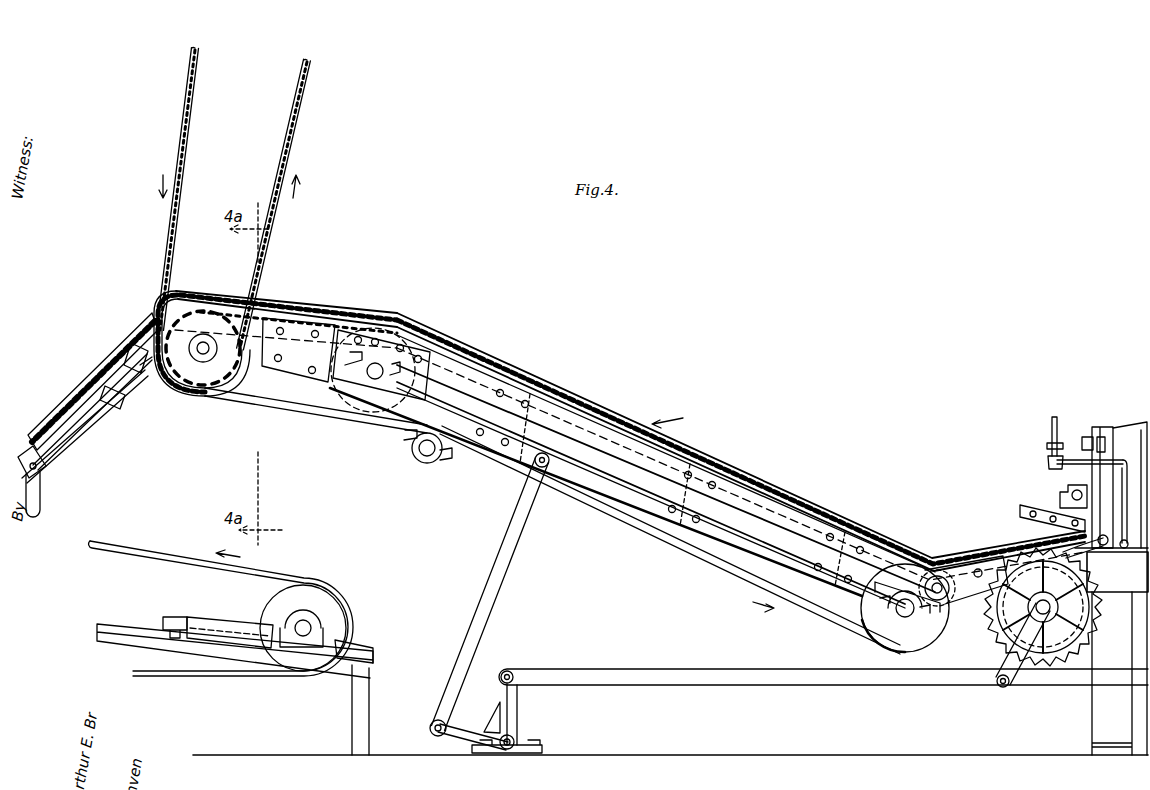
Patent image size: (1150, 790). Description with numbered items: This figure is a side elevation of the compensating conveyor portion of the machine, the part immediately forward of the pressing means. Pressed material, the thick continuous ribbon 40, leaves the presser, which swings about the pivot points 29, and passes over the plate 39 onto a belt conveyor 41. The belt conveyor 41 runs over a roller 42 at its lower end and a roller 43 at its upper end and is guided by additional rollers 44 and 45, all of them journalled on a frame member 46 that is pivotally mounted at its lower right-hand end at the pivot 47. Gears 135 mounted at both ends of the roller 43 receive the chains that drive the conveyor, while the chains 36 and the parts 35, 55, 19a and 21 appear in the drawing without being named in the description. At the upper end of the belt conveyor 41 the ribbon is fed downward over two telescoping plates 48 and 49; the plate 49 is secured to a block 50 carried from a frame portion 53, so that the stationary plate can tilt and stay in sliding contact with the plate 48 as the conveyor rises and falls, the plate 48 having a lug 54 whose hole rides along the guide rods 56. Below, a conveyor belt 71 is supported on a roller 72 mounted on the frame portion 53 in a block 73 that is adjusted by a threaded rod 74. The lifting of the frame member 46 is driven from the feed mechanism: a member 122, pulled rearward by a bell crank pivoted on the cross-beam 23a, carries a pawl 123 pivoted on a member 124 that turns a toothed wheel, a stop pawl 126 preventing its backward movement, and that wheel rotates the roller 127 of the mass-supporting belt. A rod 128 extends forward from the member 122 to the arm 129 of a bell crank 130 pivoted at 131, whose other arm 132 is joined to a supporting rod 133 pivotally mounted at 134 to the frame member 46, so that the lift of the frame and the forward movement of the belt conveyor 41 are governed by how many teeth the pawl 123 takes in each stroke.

The elevator chains 36 is at (300, 123).
The plastic material ribbon 40 is at (396, 318).
The plate 39 is at (945, 560).
The frame member 46 is at (575, 422).
The roller 43 is at (207, 364).
The gears 135 is at (228, 362).
The roller 44 is at (366, 383).
The roller 45 is at (432, 462).
The telescoping plate 48 is at (60, 420).
The telescoping plate 49 is at (75, 443).
The block 50 is at (46, 472).
The lug 54 is at (142, 374).
The block 55 is at (117, 410).
The guide rods 56 is at (70, 460).
The conveyor belt 71 is at (165, 560).
The roller 72 is at (320, 610).
The block 73 is at (325, 635).
The threaded rod 74 is at (182, 612).
The frame portion 53 is at (215, 645).
The supporting rod 133 is at (500, 580).
The pivot 134 is at (533, 468).
The rod 128 is at (713, 686).
The bell crank 130 is at (520, 668).
The arm 129 is at (518, 712).
The pivot 131 is at (510, 750).
The arm 132 is at (460, 745).
The belt conveyor 41 is at (730, 580).
The roller 42 is at (930, 640).
The pivot 47 is at (940, 576).
The sprocket wheel 19a is at (1050, 620).
The gear 21 is at (1080, 650).
The member 122 is at (1040, 660).
The pawl 123 is at (1045, 610).
The member 124 is at (1003, 645).
The roller 127 is at (1005, 620).
The stop pawl 126 is at (1125, 575).
The cross-beam 23a is at (1120, 600).
The adjusting screw 35 is at (1048, 466).
The pivot points 29 is at (1073, 495).